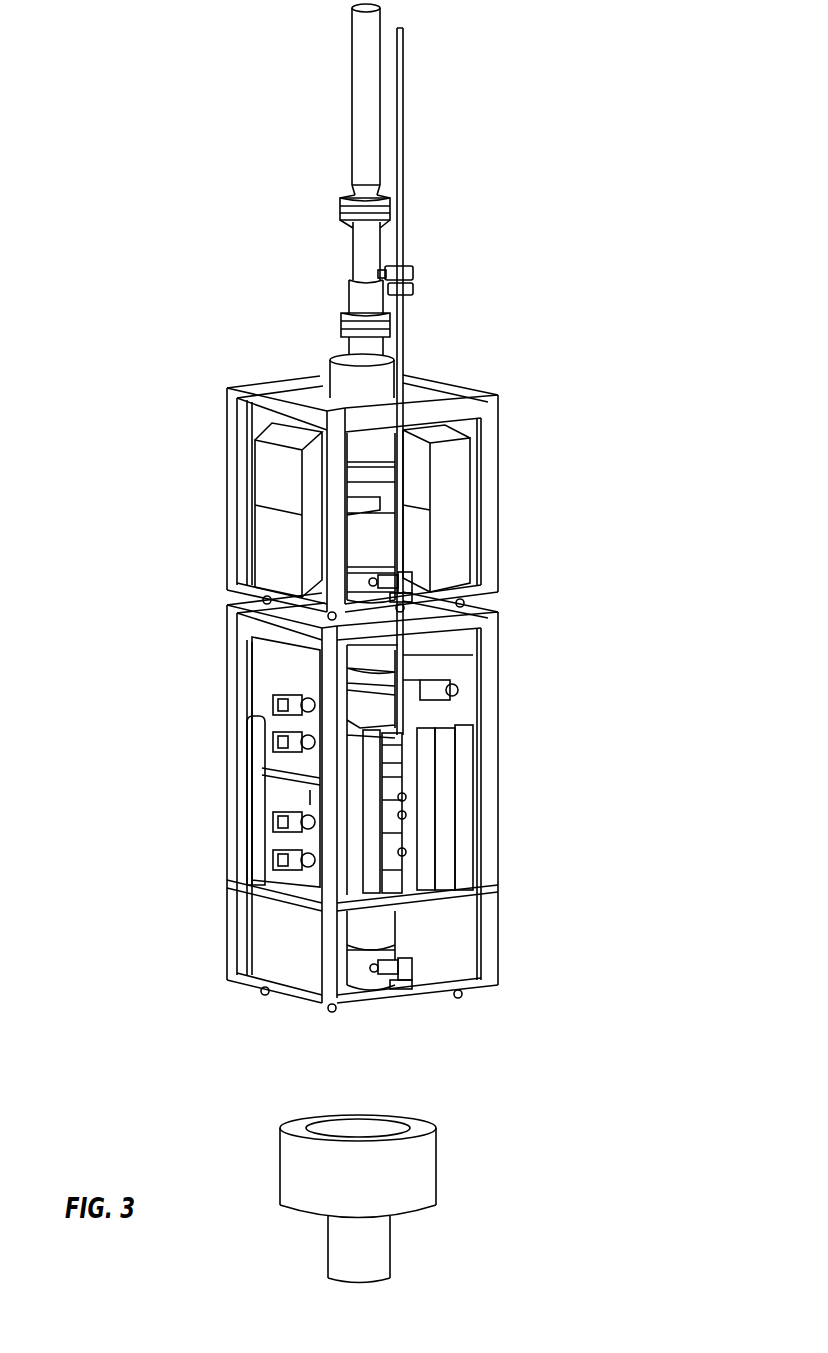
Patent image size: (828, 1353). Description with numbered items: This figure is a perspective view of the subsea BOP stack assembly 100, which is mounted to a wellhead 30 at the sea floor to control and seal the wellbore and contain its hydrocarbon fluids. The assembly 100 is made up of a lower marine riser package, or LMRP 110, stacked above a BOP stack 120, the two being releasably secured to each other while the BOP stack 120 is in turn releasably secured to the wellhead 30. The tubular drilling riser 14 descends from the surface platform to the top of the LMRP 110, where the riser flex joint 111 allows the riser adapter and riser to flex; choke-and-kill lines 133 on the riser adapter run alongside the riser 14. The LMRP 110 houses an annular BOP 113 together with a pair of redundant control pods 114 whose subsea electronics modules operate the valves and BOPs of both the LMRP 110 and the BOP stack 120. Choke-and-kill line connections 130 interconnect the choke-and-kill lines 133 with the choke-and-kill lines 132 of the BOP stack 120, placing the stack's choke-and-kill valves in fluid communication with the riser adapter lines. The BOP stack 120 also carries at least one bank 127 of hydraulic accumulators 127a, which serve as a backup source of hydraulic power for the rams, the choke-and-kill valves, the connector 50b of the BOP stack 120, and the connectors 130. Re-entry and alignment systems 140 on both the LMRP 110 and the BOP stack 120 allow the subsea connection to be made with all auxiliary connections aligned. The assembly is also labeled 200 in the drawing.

The tubular drilling riser 14 is at (353, 90).
The choke-and-kill lines on the riser adapter 133 is at (408, 132).
The riser flex joint 111 is at (363, 437).
The control units or pods 114 is at (267, 473).
The lower marine riser package (LMRP) 110 is at (504, 476).
The annular BOP 113 is at (382, 545).
The choke-and-kill line connections 130 is at (413, 583).
The re-entry and alignment systems 140 is at (462, 607).
The tower assembly 200 is at (624, 645).
The choke-and-kill lines 132 is at (410, 657).
The BOP stack 120 is at (505, 740).
The bank of hydraulic accumulators 127 is at (463, 774).
The hydraulic accumulator 127a is at (462, 843).
The subsea BOP stack assembly 100 is at (180, 770).
The connector of the BOP stack 50b is at (357, 963).
The wellhead 30 is at (424, 1178).